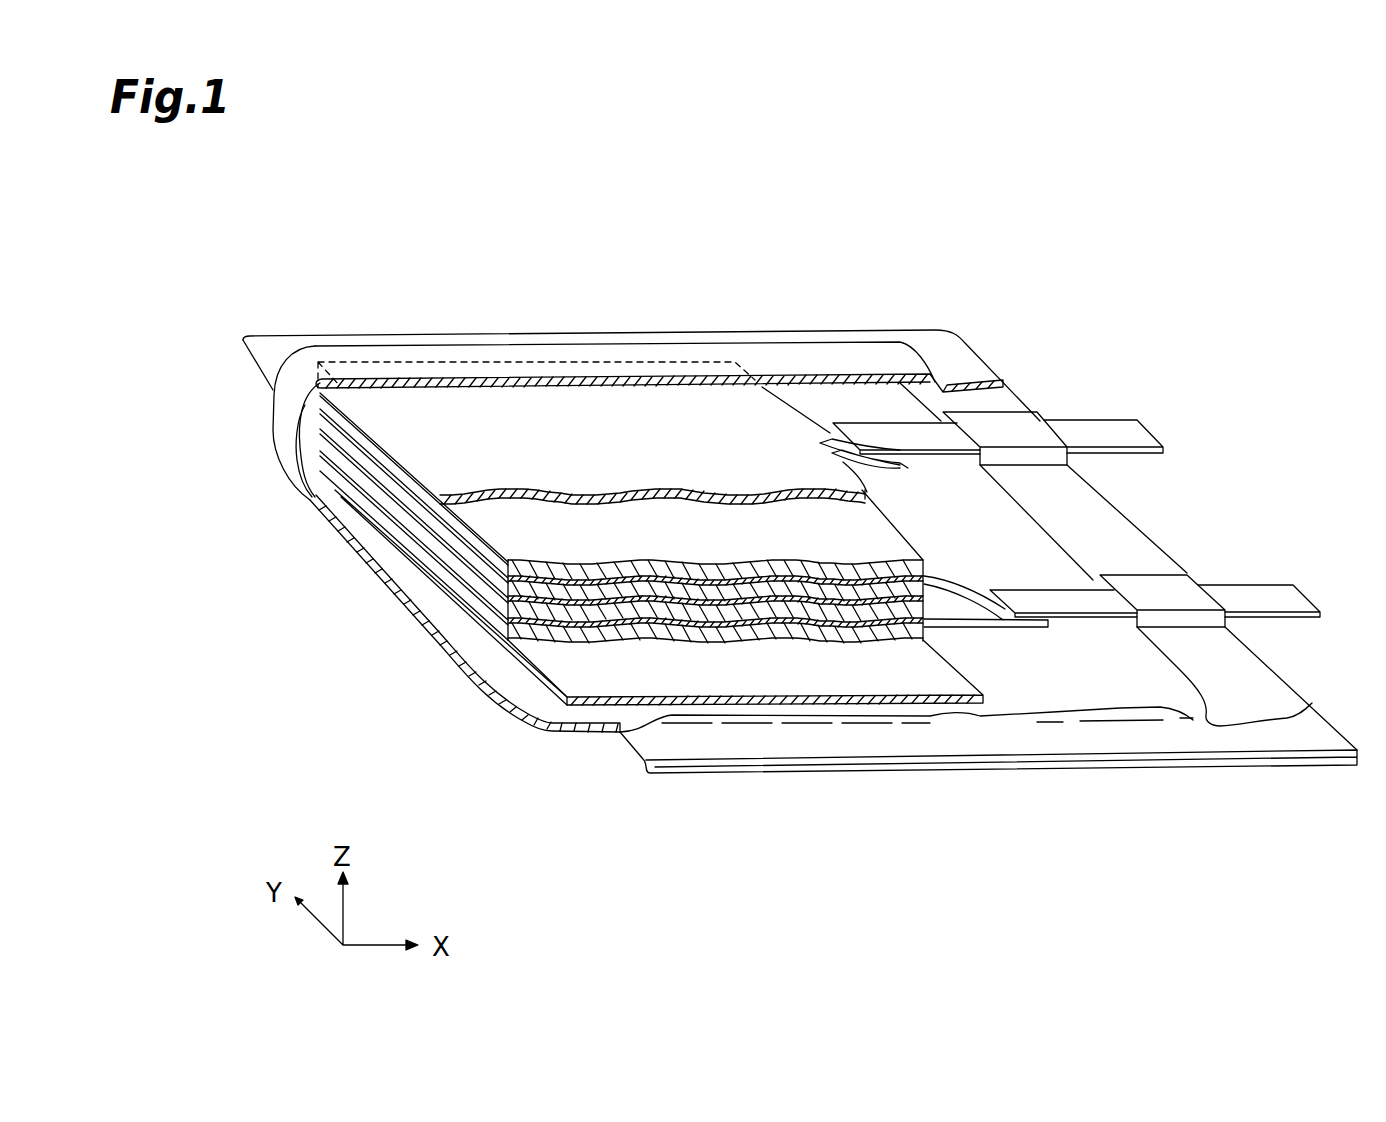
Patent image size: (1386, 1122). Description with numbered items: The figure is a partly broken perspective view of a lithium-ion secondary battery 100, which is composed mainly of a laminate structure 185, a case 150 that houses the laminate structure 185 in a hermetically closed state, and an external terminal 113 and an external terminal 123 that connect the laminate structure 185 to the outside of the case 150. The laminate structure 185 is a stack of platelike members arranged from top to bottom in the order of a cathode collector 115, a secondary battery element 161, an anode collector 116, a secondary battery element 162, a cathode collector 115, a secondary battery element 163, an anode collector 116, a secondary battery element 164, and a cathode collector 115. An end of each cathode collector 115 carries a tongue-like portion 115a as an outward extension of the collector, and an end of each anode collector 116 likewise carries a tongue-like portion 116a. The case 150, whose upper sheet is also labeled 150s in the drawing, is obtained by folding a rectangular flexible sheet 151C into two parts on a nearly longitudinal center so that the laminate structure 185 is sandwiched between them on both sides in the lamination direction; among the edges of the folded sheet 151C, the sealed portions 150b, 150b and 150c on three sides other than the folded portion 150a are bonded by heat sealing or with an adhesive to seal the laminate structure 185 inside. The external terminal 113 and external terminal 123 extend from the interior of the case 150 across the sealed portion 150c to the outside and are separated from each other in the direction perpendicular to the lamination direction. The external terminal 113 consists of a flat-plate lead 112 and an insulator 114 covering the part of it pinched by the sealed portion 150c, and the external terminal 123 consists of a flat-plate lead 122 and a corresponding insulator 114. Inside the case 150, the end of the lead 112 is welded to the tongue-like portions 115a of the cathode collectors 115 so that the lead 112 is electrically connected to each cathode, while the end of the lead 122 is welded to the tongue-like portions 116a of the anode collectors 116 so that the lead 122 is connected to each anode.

The lithium-ion secondary battery 100 is at (866, 183).
The case 150 is at (548, 334).
The exterior package upper sheet 150s is at (641, 375).
The folded portion 150a is at (288, 405).
The sealed portion 150b is at (687, 340).
The sealed portion 150c is at (1097, 527).
The rectangular flexible sheet 151C is at (767, 340).
The laminate structure 185 is at (282, 522).
The cathode collector 115 is at (413, 487).
The anode collector 116 is at (438, 525).
The secondary battery element 161 is at (430, 512).
The secondary battery element 162 is at (445, 538).
The secondary battery element 163 is at (455, 567).
The secondary battery element 164 is at (463, 603).
The tongue-like portion 115a is at (830, 436).
The tongue-like portion 116a is at (958, 586).
The external terminal 113 is at (1137, 352).
The insulator 114 is at (1023, 418).
The lead 112 is at (1105, 430).
The external terminal 123 is at (1300, 515).
The lead 122 is at (1270, 594).